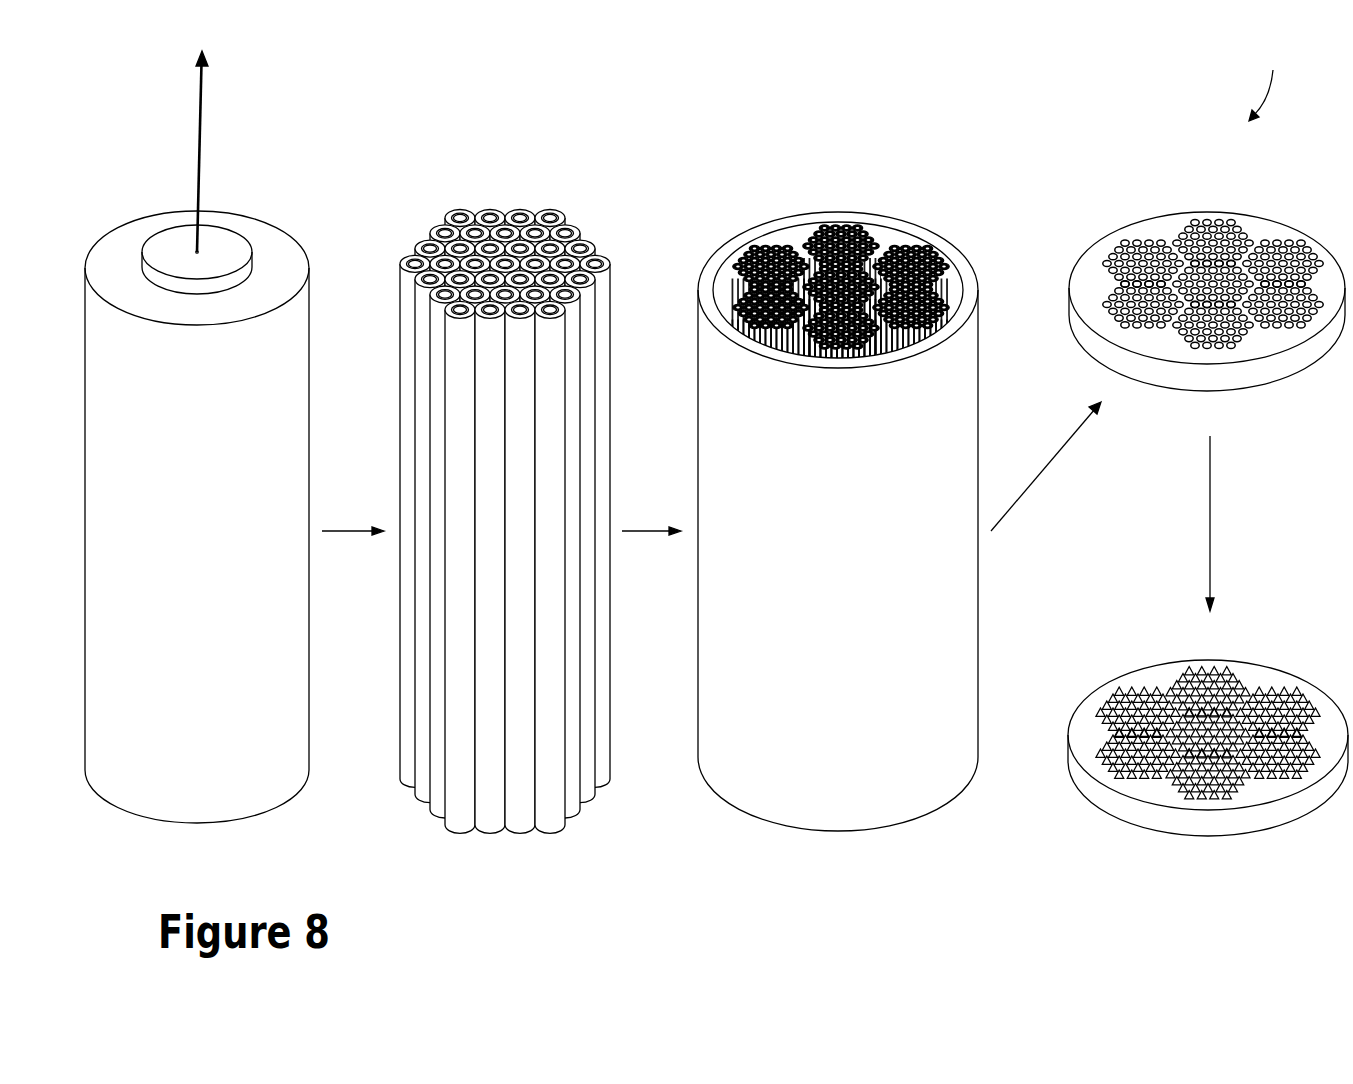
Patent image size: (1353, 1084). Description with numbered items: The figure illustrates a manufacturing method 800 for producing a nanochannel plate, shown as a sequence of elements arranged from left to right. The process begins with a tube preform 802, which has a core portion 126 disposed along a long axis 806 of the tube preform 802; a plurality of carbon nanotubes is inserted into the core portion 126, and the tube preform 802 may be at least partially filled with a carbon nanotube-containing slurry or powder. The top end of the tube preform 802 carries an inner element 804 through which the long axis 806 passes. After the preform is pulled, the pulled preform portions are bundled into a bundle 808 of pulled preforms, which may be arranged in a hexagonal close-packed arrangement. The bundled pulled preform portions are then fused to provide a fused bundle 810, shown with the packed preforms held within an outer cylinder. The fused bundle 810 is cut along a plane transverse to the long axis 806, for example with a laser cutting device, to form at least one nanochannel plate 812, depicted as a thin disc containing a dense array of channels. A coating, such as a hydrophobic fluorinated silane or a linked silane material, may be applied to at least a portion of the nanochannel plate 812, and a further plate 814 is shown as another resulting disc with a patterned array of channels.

The fabrication process 800 is at (1281, 86).
The tube preform 802 is at (292, 238).
The core disc 804 is at (227, 237).
The long axis 806 is at (202, 143).
The core portion 126 is at (212, 235).
The bundle of pulled preforms 808 is at (562, 212).
The fused bundle 810 is at (907, 220).
The nanochannel plate 812 is at (1121, 228).
The disc with triangular channels 814 is at (1163, 664).